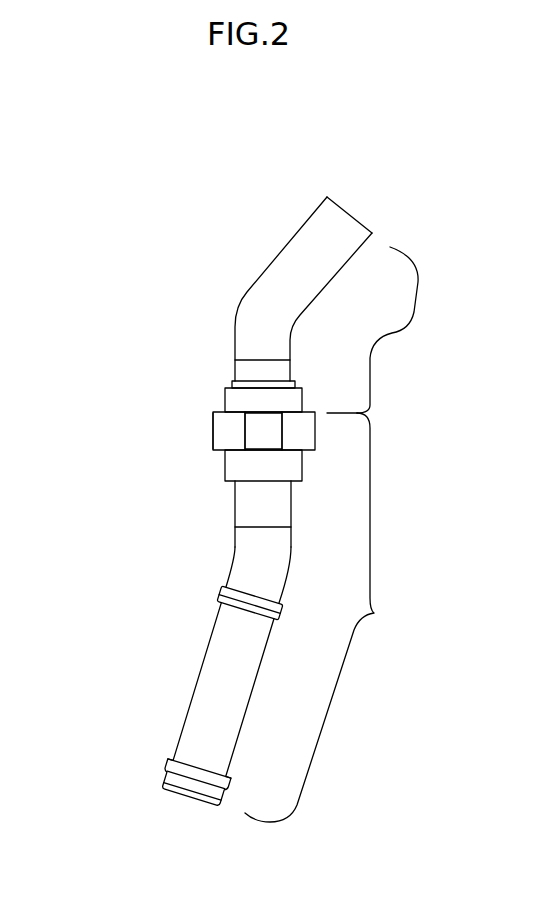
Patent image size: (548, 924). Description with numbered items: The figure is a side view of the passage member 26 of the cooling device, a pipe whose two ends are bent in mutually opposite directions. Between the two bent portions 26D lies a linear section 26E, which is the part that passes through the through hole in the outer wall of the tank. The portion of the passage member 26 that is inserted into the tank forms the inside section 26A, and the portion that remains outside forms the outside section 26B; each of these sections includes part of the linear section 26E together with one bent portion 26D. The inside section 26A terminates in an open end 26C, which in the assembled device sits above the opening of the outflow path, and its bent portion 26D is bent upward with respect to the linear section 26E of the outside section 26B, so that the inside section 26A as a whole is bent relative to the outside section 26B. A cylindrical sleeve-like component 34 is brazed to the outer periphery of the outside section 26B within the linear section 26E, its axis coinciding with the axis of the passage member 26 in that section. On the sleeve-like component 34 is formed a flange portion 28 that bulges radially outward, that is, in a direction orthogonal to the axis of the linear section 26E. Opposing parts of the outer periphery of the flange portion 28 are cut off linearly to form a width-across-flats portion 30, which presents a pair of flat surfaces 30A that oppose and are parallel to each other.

The passage member 26 is at (160, 537).
The inside section 26A is at (386, 281).
The outside section 26B is at (266, 617).
The open end 26C is at (347, 210).
The bent portion 26D is at (300, 228).
The linear section 26E is at (235, 482).
The flange portion 28 is at (212, 413).
The width-across-flats portion 30 is at (180, 441).
The flat surfaces 30A is at (263, 435).
The sleeve-like component 34 is at (205, 428).